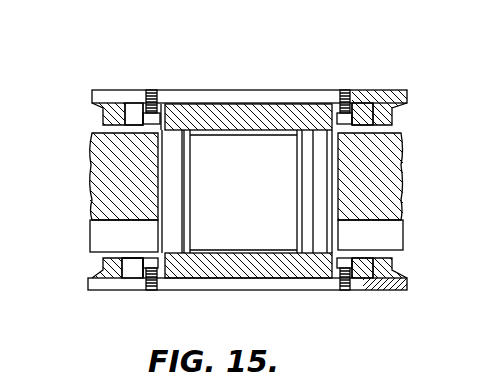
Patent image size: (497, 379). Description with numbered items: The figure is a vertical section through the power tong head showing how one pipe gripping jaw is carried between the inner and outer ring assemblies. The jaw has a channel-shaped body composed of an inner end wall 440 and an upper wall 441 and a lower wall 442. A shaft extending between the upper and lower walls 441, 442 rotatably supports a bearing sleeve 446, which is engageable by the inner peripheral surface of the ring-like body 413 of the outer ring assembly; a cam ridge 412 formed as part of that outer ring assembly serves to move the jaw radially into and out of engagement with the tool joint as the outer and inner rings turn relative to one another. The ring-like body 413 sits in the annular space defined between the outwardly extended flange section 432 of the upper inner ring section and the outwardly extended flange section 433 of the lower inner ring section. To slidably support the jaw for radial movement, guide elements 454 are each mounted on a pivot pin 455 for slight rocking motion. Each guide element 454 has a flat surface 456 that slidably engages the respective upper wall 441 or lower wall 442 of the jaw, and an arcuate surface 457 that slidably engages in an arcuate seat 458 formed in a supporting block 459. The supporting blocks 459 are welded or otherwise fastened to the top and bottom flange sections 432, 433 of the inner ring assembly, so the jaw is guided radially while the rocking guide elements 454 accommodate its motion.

The cam ridge 412 is at (393, 233).
The ring-like body 413 is at (388, 174).
The outwardly extended flange section 432 is at (308, 97).
The outwardly extended flange section 433 is at (377, 284).
The inner end wall 440 is at (300, 239).
The upper wall 441 is at (210, 116).
The lower wall 442 is at (185, 270).
The bearing sleeve 446 is at (243, 192).
The guide element 454 is at (133, 112).
The pivot pin 455 is at (152, 90).
The flat surface 456 is at (171, 114).
The arcuate surface 457 is at (127, 248).
The arcuate seat 458 is at (138, 246).
The supporting block 459 is at (103, 113).